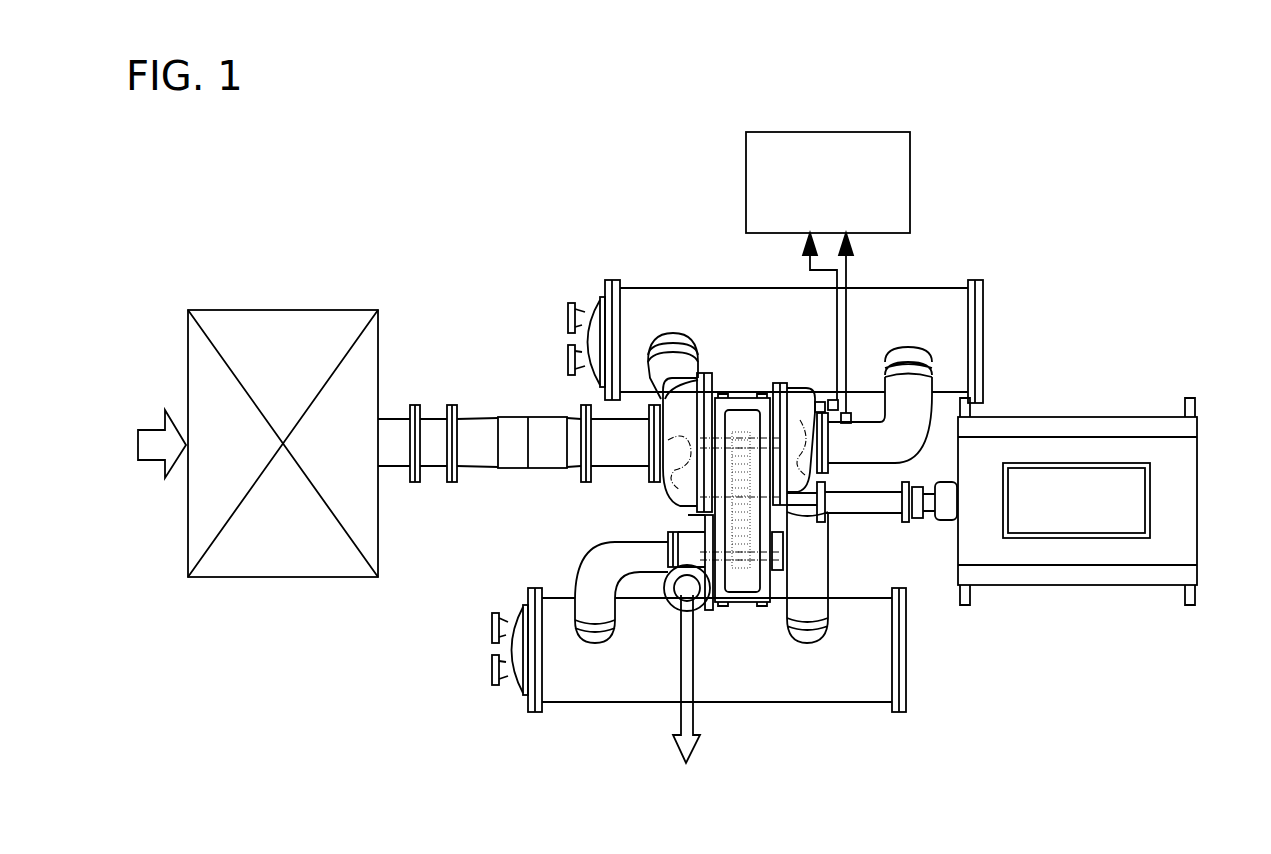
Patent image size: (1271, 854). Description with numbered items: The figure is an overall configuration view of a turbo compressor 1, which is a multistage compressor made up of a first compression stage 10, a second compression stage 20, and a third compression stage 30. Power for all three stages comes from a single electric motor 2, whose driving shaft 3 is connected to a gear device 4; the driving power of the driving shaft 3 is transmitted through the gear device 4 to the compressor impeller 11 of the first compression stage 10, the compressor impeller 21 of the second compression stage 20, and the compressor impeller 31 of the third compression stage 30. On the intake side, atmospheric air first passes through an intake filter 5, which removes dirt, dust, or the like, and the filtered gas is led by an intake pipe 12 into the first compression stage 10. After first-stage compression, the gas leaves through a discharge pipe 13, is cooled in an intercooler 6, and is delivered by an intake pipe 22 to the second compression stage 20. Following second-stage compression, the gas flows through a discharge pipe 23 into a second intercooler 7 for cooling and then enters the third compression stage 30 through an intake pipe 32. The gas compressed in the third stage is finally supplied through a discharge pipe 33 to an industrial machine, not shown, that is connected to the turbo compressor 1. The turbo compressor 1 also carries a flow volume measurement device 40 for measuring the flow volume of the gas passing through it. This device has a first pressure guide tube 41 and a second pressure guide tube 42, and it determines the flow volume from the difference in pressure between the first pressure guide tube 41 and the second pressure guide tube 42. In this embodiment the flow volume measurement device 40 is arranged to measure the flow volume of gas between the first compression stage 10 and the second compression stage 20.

The turbo compressor 1 is at (506, 198).
The electric motor 2 is at (1080, 418).
The driving shaft 3 is at (927, 518).
The gear device 4 is at (757, 525).
The intake filter 5 is at (282, 310).
The intercooler 6 is at (685, 288).
The intercooler 7 is at (627, 705).
The first compression stage 10 is at (661, 403).
The compressor impeller 11 is at (666, 478).
The intake pipe 12 is at (517, 418).
The discharge pipe 13 is at (645, 378).
The second compression stage 20 is at (795, 383).
The compressor impeller 21 is at (805, 443).
The intake pipe 22 is at (893, 455).
The discharge pipe 23 is at (830, 579).
The third compression stage 30 is at (672, 527).
The compressor impeller 31 is at (692, 522).
The intake pipe 32 is at (590, 556).
The discharge pipe 33 is at (664, 584).
The flow volume measurement device 40 is at (910, 168).
The first pressure guide tube 41 is at (848, 305).
The second pressure guide tube 42 is at (837, 318).